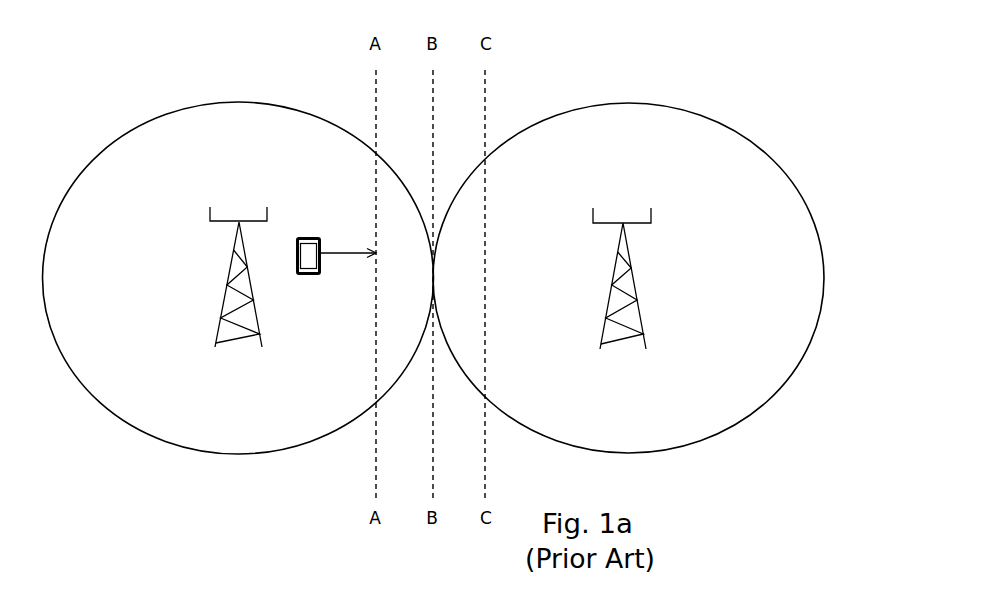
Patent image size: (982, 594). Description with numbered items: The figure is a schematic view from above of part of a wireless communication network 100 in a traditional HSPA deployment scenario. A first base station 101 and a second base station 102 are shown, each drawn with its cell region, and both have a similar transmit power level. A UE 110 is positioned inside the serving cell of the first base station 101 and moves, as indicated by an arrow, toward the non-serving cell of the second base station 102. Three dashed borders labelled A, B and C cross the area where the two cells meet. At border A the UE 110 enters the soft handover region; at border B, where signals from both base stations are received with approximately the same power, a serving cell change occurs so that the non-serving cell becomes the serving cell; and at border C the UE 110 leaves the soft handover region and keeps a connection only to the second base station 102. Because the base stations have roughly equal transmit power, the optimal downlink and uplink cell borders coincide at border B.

The wireless communication system 100 is at (587, 67).
The first base station 101 is at (215, 343).
The second base station 102 is at (600, 345).
The UE 110 is at (307, 237).